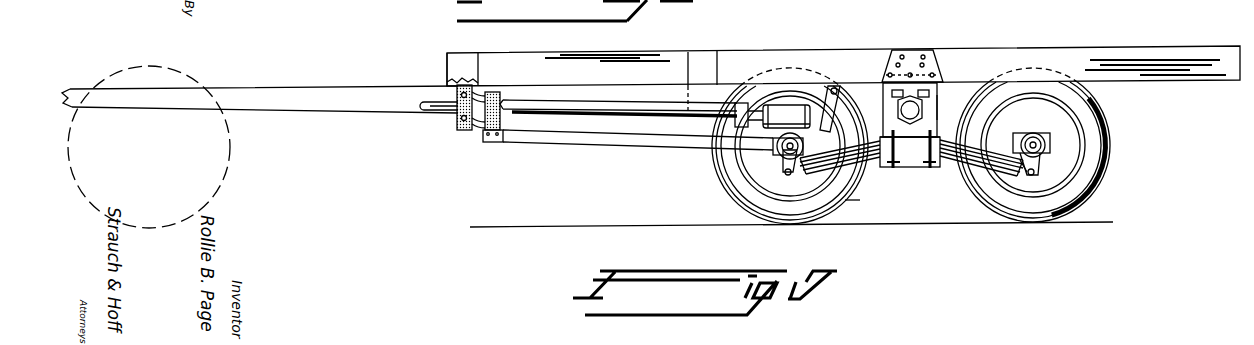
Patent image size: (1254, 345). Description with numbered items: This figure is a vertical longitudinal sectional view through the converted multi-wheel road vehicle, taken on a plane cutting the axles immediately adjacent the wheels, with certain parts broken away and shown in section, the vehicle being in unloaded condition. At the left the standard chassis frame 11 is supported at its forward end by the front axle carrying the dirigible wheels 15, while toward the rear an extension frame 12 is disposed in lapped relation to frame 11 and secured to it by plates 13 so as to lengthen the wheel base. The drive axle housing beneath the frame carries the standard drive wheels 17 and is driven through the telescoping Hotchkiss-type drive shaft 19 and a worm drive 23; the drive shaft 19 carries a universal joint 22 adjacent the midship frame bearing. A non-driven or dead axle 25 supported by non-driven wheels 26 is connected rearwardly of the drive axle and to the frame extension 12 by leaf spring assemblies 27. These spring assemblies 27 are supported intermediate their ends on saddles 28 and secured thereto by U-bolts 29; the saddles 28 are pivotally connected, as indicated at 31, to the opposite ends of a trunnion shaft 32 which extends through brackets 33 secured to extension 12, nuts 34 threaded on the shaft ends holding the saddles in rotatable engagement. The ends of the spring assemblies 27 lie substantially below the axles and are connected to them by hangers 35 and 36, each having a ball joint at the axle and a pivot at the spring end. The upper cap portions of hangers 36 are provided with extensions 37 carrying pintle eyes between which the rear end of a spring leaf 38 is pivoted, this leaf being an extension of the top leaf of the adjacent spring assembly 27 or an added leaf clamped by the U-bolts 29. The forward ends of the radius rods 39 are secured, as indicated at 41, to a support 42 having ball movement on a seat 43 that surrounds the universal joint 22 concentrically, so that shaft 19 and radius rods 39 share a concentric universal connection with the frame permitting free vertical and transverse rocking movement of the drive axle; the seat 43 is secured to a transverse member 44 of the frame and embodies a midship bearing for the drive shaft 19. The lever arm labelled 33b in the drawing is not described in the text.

The chassis frame 11 is at (318, 95).
The extension frame 12 is at (995, 53).
The plates 13 is at (464, 62).
The dirigible wheels 15 is at (200, 80).
The drive wheels 17 is at (733, 188).
The drive shaft 19 is at (628, 118).
The universal joint 22 is at (502, 107).
The worm drive 23 is at (787, 113).
The dead axle 25 is at (1030, 134).
The non-driven wheels 26 is at (1093, 100).
The leaf spring assemblies 27 is at (740, 102).
The saddles 28 is at (918, 127).
The U-bolts 29 is at (907, 158).
The pivotal connection 31 is at (837, 88).
The trunnion shaft 32 is at (927, 112).
The brackets 33 is at (913, 60).
The lever arm 33b is at (788, 176).
The nuts 34 is at (938, 100).
The hangers 35 is at (772, 152).
The hangers 36 is at (1045, 152).
The extensions 37 is at (1038, 137).
The spring leaf 38 is at (1027, 174).
The radius rods 39 is at (567, 143).
The securing connection 41 is at (486, 143).
The support 42 is at (500, 95).
The seat 43 is at (468, 92).
The transverse member 44 is at (433, 104).